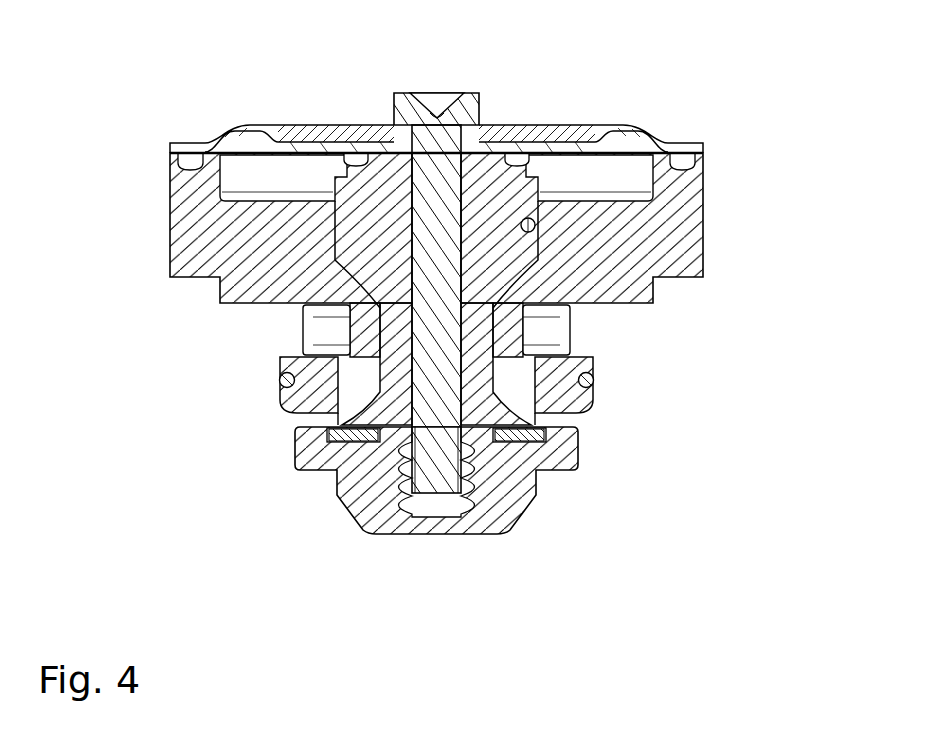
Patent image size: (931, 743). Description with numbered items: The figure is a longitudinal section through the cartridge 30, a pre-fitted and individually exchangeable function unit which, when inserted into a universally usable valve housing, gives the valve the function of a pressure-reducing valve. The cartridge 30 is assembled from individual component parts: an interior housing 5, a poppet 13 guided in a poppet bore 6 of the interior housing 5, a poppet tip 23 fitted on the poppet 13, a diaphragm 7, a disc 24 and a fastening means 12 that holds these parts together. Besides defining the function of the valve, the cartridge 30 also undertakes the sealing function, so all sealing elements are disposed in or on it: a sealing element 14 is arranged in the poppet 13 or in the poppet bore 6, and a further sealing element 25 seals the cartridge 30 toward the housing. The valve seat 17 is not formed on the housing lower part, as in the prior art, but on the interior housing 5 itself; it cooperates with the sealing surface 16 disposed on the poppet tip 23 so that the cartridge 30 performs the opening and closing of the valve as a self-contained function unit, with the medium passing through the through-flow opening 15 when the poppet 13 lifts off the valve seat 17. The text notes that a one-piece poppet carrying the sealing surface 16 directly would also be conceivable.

The interior housing 5 is at (687, 243).
The poppet bore 6 is at (537, 299).
The diaphragm 7 is at (688, 147).
The fastening means 12 is at (463, 100).
The poppet 13 is at (518, 260).
The sealing element 14 is at (537, 225).
The through-flow opening 15 is at (280, 333).
The sealing surface 16 is at (547, 437).
The valve seat/sealing edge 17 is at (318, 436).
The poppet tip 23 is at (512, 508).
The disc 24 is at (575, 130).
The sealing element 25 is at (270, 381).
The cartridge for reducing pressure 30 is at (203, 92).